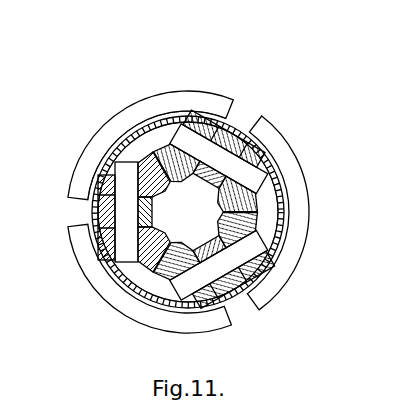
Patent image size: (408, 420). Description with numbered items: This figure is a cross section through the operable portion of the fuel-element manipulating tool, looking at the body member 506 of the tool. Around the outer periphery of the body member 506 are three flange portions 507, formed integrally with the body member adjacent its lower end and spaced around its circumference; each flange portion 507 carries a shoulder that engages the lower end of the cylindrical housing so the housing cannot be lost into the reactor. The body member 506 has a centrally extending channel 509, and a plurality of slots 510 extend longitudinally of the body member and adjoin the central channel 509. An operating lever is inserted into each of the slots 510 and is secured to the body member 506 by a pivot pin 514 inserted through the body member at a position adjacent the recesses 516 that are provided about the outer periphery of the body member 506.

The body member 506 is at (151, 170).
The flange portions 507 is at (203, 93).
The centrally extending channel 509 is at (160, 261).
The slots 510 is at (199, 238).
The pivot pin 514 is at (266, 150).
The recesses 516 is at (130, 147).